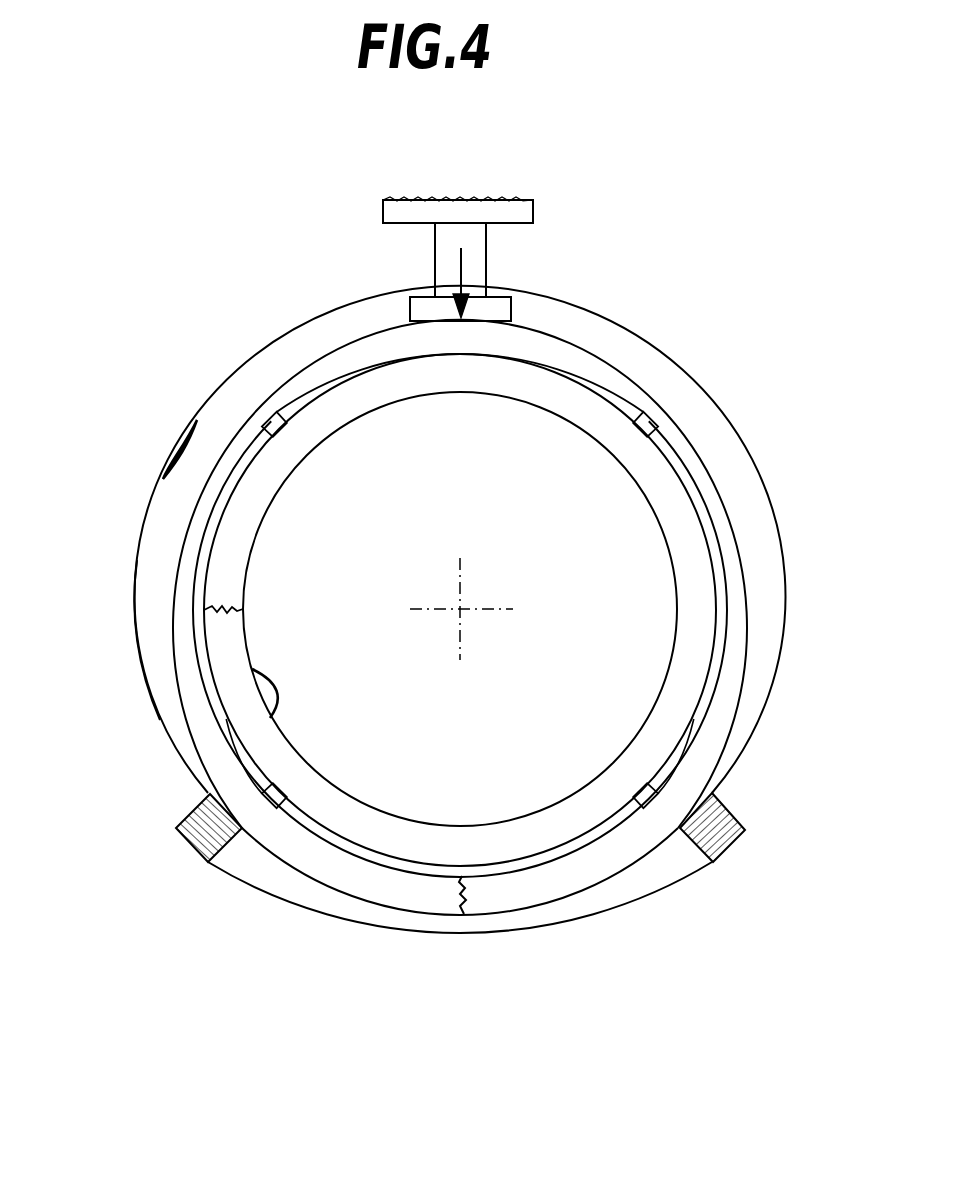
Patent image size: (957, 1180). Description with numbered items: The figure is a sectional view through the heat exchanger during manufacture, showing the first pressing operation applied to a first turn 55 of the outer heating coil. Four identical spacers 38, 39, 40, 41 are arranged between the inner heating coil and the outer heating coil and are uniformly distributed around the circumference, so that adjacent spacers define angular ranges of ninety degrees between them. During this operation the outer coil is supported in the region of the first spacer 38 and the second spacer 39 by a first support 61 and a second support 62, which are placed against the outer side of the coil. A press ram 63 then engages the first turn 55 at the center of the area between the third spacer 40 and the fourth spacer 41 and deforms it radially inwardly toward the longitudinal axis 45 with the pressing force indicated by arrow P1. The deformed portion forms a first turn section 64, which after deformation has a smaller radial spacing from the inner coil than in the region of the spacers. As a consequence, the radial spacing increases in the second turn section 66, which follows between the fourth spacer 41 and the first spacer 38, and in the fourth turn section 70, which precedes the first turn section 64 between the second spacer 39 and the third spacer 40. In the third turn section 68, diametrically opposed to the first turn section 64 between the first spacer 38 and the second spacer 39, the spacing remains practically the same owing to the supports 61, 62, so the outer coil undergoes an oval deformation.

The first spacer 38 is at (637, 803).
The second spacer 39 is at (284, 803).
The third spacer 40 is at (272, 418).
The fourth spacer 41 is at (648, 428).
The longitudinal axis 45 is at (466, 606).
The first turn 55 is at (132, 680).
The first support 61 is at (722, 832).
The second support 62 is at (196, 838).
The press ram 63 is at (500, 307).
The first turn section 64 is at (403, 341).
The second turn section 66 is at (770, 562).
The third turn section 68 is at (395, 893).
The fourth turn section 70 is at (160, 550).
The pressing force P1 is at (465, 263).